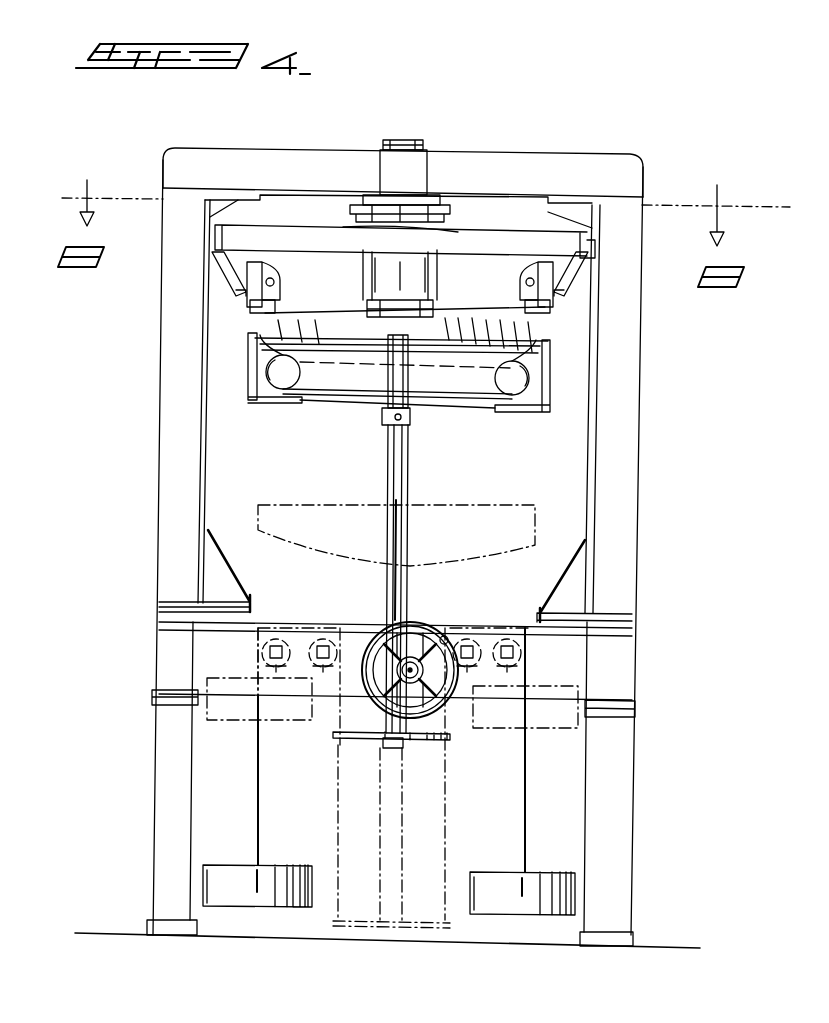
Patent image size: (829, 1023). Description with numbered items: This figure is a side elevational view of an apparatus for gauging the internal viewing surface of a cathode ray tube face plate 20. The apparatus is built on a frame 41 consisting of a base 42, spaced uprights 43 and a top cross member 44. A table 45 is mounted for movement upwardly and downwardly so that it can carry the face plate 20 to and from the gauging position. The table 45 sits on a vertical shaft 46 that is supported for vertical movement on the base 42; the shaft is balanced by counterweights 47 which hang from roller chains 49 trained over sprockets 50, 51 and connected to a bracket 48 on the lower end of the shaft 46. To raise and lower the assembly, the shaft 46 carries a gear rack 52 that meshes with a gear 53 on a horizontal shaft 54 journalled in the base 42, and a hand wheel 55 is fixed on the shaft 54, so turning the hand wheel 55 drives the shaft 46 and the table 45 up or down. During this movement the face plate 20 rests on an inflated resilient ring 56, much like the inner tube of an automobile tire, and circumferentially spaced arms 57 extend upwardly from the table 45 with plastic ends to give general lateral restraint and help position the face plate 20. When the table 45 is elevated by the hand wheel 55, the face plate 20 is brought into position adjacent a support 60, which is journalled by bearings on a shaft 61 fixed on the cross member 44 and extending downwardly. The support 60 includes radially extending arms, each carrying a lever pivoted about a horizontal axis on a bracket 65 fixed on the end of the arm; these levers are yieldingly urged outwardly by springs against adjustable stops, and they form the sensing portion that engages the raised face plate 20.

The face plate 20 is at (240, 319).
The frame 41 is at (142, 493).
The base 42 is at (172, 648).
The spaced uprights 43 is at (160, 430).
The top cross member 44 is at (575, 165).
The table 45 is at (440, 402).
The vertical shaft 46 is at (404, 490).
The counterweights 47 is at (212, 880).
The bracket 48 is at (442, 742).
The roller chains 49 is at (260, 800).
The sprockets 50 is at (276, 638).
The sprockets 51 is at (323, 638).
The gear rack 52 is at (405, 555).
The gear 53 is at (443, 636).
The horizontal shaft 54 is at (378, 624).
The hand wheel 55 is at (382, 705).
The inflated resilient ring 56 is at (285, 378).
The arms 57 is at (245, 352).
The support 60 is at (477, 206).
The shaft 61 is at (405, 140).
The bracket 65 is at (232, 268).